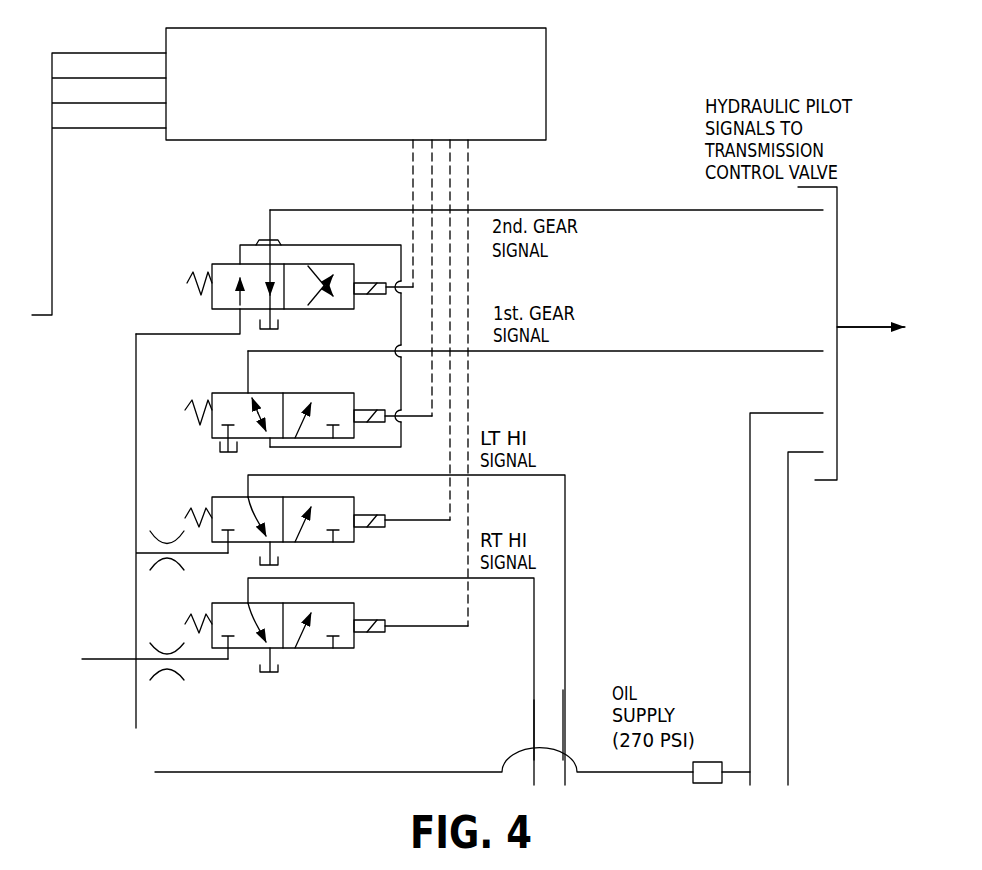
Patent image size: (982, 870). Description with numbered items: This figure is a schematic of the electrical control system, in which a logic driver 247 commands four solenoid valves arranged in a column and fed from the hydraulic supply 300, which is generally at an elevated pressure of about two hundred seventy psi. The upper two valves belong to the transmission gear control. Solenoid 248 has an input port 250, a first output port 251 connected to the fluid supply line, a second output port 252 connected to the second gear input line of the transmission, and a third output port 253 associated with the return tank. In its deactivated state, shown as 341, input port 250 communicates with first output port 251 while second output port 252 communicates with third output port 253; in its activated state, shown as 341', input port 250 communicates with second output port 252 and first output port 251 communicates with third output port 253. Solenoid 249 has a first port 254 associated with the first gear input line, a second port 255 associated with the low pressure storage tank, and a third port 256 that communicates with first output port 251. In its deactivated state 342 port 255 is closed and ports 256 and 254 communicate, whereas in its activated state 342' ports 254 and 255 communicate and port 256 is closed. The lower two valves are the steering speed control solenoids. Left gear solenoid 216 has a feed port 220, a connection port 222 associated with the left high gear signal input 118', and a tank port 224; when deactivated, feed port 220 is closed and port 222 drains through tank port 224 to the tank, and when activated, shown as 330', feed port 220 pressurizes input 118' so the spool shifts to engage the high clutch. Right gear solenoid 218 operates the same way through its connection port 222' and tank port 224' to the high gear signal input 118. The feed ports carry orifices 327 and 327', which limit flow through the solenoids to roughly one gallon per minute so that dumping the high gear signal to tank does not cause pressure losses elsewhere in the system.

The logic driver 247 is at (546, 117).
The solenoid 248 is at (187, 272).
The solenoid 249 is at (185, 400).
The input port 250 is at (228, 320).
The first output port 251 is at (240, 256).
The second output port 252 is at (258, 243).
The third output port 253 is at (279, 323).
The first port 254 is at (250, 392).
The second port 255 is at (221, 446).
The third port 256 is at (270, 441).
The deactivated state 341 is at (299, 248).
The activated state 341' is at (343, 257).
The deactivated state 342 is at (274, 393).
The activated state 342' is at (326, 394).
The left gear solenoid 216 is at (212, 498).
The right gear solenoid 218 is at (212, 606).
The feed port 220 is at (150, 569).
The connection port 222 is at (383, 618).
The connection port 222' is at (368, 672).
The tank port 224 is at (317, 557).
The tank port 224' is at (318, 663).
The orifice 327 is at (119, 540).
The orifice 327' is at (140, 676).
The activated state 330' is at (357, 560).
The high gear signal input 118 is at (602, 699).
The left high gear signal input 118' is at (617, 676).
The hydraulic supply 300 is at (722, 768).